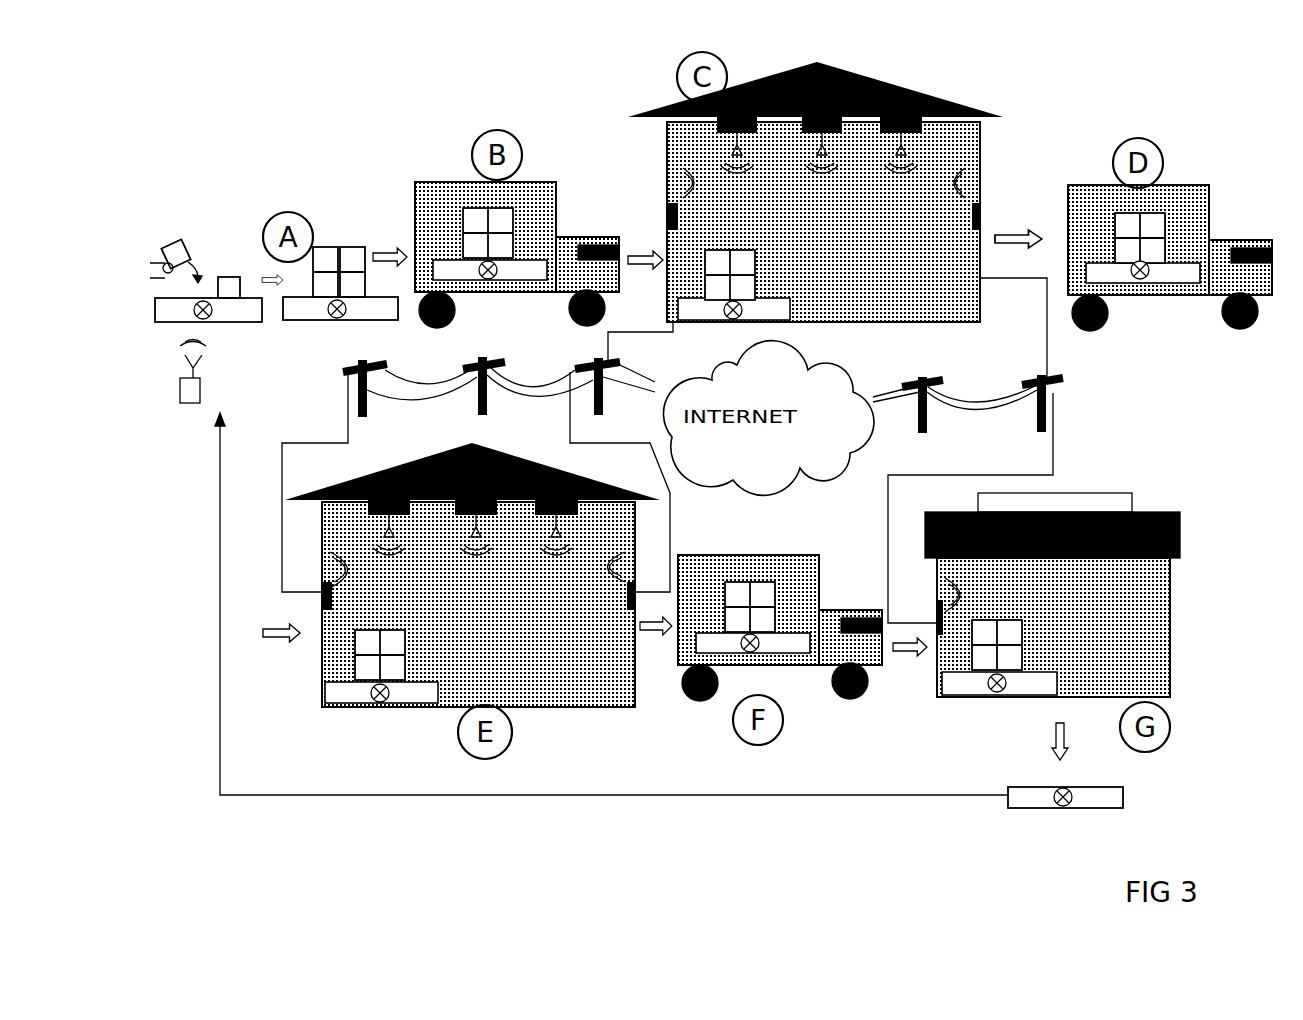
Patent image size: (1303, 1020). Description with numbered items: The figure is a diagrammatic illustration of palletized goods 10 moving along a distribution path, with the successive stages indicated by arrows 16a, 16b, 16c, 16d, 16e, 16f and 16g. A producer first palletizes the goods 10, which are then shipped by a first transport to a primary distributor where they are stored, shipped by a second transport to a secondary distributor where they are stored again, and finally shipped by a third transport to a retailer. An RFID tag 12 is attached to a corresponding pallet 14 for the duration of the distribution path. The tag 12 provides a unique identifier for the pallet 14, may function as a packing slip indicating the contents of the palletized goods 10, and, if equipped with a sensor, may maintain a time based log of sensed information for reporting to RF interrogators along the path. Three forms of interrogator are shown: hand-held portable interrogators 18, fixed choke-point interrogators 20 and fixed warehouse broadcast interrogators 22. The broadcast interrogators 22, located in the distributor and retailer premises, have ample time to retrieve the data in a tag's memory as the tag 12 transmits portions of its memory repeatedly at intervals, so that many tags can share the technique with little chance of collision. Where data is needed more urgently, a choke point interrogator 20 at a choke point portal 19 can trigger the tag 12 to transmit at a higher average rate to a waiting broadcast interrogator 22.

The palletized goods 10 is at (190, 237).
The RFID tag 12 is at (343, 310).
The pallet 14 is at (240, 323).
The arrow 16a is at (276, 272).
The arrow 16b is at (379, 257).
The arrow 16c is at (633, 258).
The arrow 16d is at (1005, 236).
The arrow 16e is at (281, 624).
The arrow 16f is at (648, 632).
The arrow 16g is at (905, 653).
The hand-held portable interrogator 18 is at (190, 405).
The choke point portal 19 is at (668, 265).
The fixed choke-point interrogator 20 is at (682, 215).
The fixed warehouse broadcast interrogator 22 is at (933, 93).